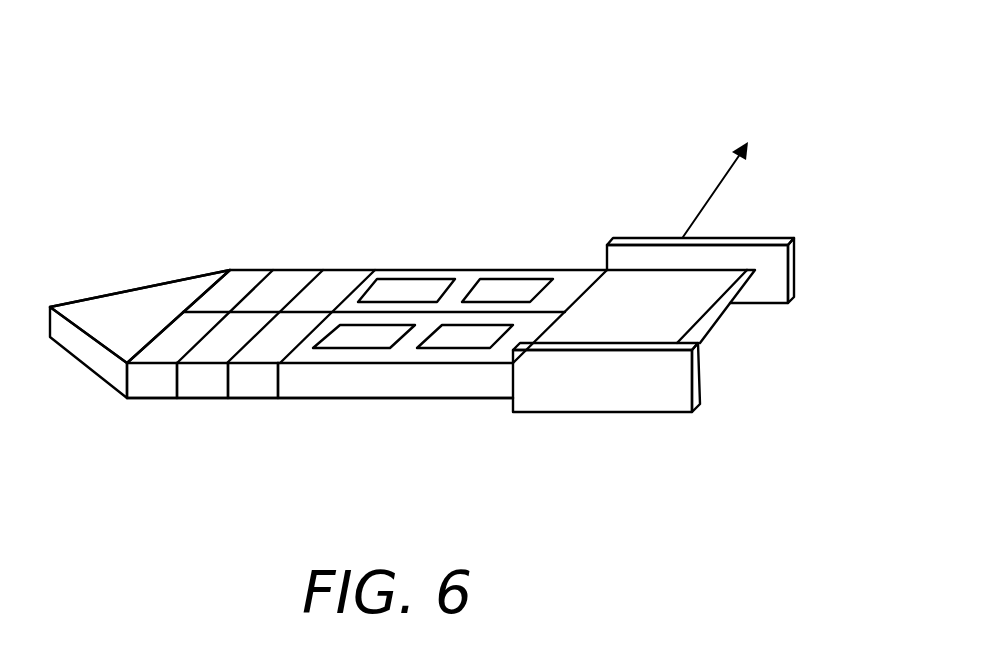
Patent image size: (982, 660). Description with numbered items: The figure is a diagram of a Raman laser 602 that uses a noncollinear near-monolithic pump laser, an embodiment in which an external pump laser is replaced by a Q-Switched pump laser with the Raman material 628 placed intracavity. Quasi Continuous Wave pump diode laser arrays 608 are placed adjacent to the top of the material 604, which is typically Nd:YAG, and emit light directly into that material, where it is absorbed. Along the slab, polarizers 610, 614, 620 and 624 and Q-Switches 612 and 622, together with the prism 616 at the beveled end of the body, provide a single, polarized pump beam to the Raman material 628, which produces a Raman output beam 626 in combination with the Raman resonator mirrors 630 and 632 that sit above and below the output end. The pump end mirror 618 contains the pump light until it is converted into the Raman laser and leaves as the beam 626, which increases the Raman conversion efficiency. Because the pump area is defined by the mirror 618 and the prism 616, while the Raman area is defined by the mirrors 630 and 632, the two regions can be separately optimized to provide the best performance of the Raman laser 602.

The electrical connector assembly 602 is at (672, 122).
The material 604 is at (391, 420).
The Quasi Continuous Wave pump diode laser arrays 608 is at (444, 337).
The polarizer 610 is at (344, 267).
The Q-Switch 612 is at (285, 279).
The polarizer 614 is at (225, 282).
The prism 616 is at (136, 294).
The pump end mirror 618 is at (675, 316).
The polarizer 620 is at (122, 426).
The Q-Switch 622 is at (190, 419).
The polarizer 624 is at (236, 443).
The Raman output beam 626 is at (756, 189).
The Raman material 628 is at (762, 349).
The Raman resonator mirror 630 is at (606, 415).
The Raman resonator mirror 632 is at (755, 268).